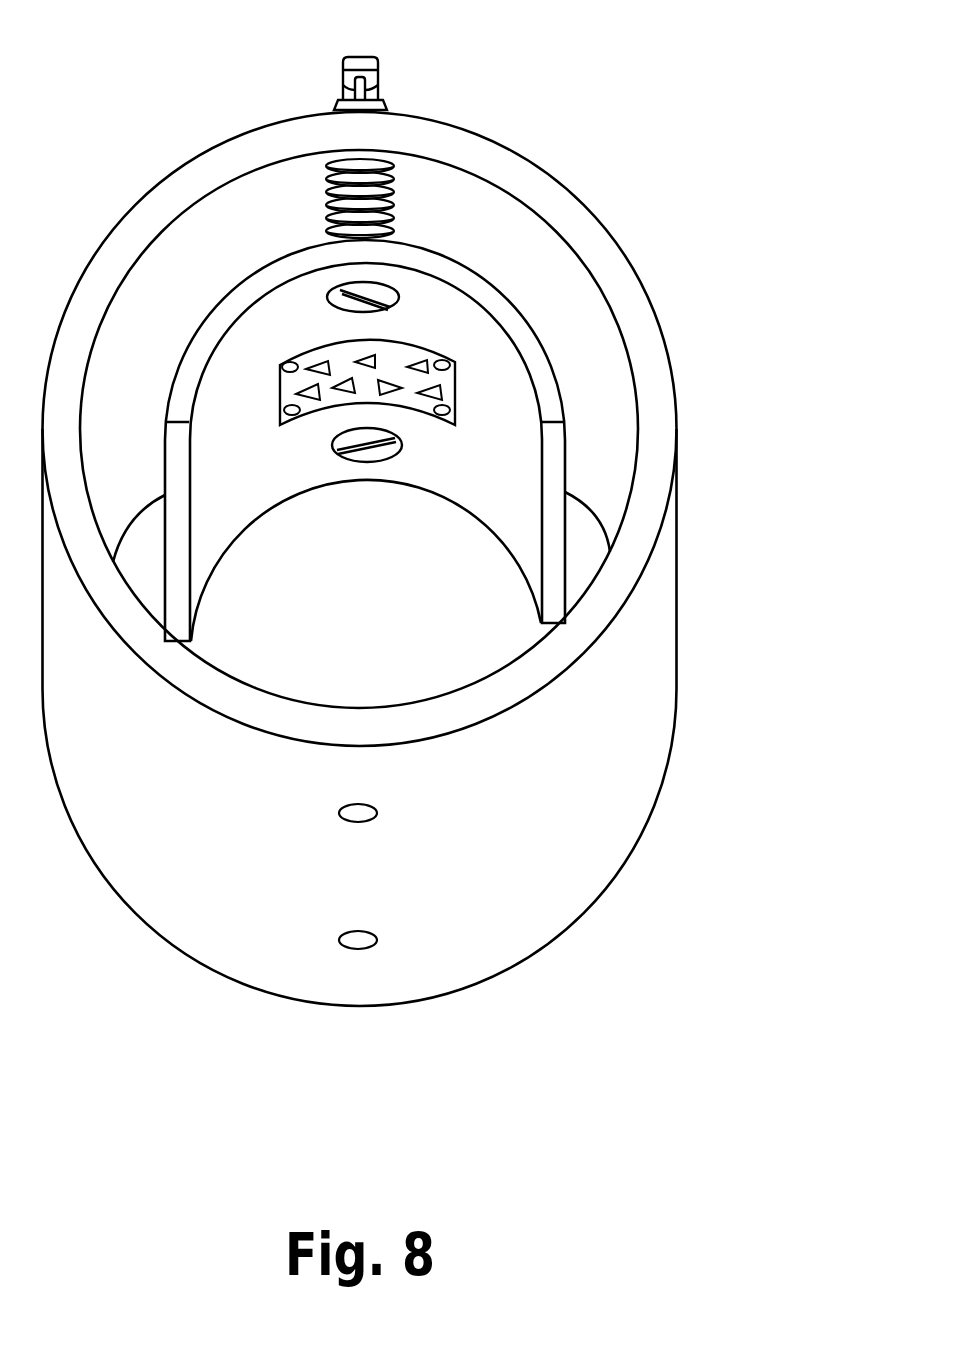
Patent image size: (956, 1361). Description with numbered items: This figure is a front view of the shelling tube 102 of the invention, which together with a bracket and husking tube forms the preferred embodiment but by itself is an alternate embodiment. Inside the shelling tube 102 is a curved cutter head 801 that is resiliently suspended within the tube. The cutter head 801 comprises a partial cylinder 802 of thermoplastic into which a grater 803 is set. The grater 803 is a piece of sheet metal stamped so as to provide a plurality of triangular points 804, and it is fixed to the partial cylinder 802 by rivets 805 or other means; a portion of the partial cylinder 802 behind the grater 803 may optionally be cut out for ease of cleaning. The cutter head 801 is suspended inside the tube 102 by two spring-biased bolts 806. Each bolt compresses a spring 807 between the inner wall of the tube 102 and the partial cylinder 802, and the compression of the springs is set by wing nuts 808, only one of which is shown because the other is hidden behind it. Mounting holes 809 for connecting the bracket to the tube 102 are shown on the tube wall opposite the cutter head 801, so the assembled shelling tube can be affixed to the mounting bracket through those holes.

The shelling tube 102 is at (655, 370).
The cutter head 801 is at (534, 238).
The partial cylinder 802 is at (547, 373).
The grater 803 is at (395, 352).
The triangular points 804 is at (310, 392).
The rivets 805 is at (450, 402).
The spring-biased bolts 806 is at (353, 433).
The spring 807 is at (393, 183).
The wing nuts 808 is at (342, 102).
The mounting holes 809 is at (370, 941).